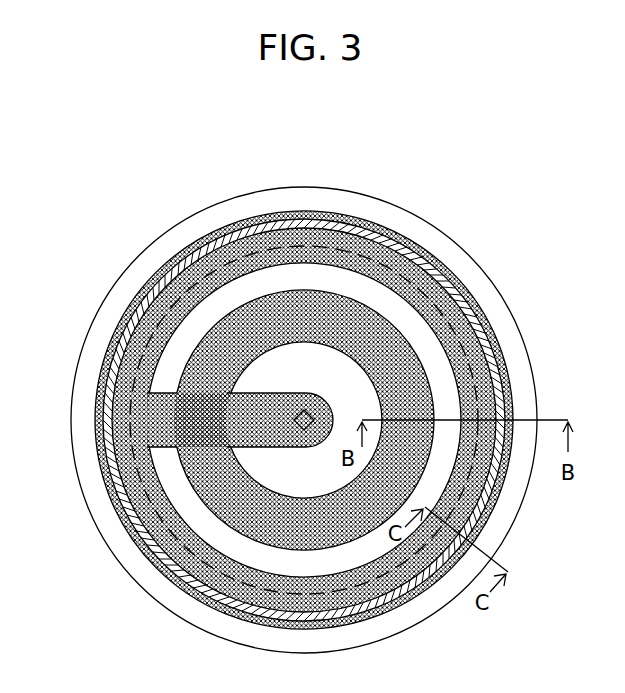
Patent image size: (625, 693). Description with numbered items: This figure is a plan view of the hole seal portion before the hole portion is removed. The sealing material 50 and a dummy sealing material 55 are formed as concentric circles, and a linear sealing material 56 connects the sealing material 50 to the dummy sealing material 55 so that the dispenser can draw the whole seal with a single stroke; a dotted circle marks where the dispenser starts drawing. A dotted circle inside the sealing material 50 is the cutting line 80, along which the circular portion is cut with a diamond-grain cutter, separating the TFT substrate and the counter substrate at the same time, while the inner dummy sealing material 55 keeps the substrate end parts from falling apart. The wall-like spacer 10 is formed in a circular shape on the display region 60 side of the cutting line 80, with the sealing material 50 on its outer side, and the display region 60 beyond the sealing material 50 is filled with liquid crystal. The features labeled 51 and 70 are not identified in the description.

The wall-like spacer 10 is at (398, 230).
The sealing material 50 is at (358, 212).
The center pin 51 is at (307, 412).
The dummy sealing material 55 is at (368, 325).
The linear sealing material 56 is at (165, 410).
The display region 60 is at (523, 342).
The gap 70 is at (175, 478).
The cutting line 80 is at (480, 306).